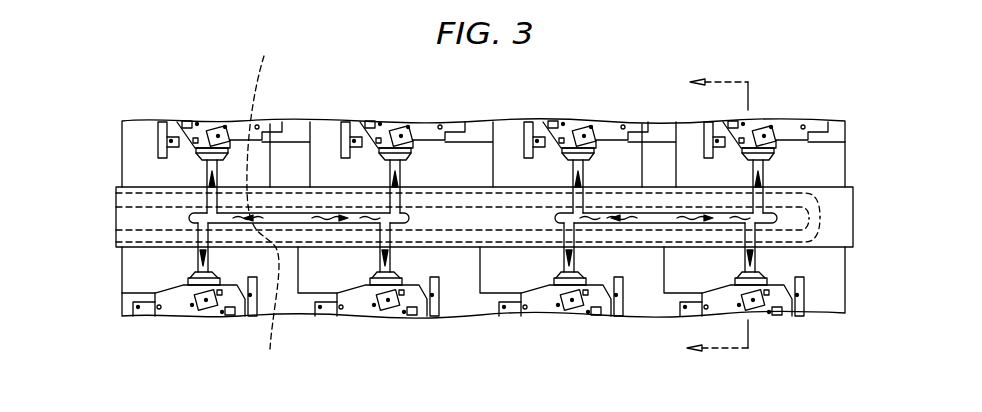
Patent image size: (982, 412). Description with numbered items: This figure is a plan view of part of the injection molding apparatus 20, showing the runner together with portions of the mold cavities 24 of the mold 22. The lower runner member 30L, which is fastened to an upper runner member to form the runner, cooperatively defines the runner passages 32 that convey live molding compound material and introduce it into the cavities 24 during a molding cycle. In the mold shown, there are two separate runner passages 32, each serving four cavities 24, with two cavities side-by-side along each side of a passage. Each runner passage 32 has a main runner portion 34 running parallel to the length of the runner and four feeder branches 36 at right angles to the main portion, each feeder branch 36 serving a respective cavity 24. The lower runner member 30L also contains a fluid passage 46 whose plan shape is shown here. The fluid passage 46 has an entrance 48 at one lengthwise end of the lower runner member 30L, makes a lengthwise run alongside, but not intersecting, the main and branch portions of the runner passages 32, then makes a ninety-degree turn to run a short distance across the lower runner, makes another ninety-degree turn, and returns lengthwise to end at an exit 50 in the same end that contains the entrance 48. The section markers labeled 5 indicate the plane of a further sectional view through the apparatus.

The injection molding apparatus 20 is at (845, 58).
The mold 22 is at (122, 320).
The cavities 24 is at (235, 124).
The lower runner member 30L is at (798, 182).
The runner passages 32 is at (323, 203).
The main runner portion 34 is at (270, 124).
The feeder branches 36 is at (190, 190).
The fluid passage 46 is at (878, 213).
The entrance 48 is at (117, 233).
The exit 50 is at (117, 196).
The section line 5- 5 is at (710, 219).